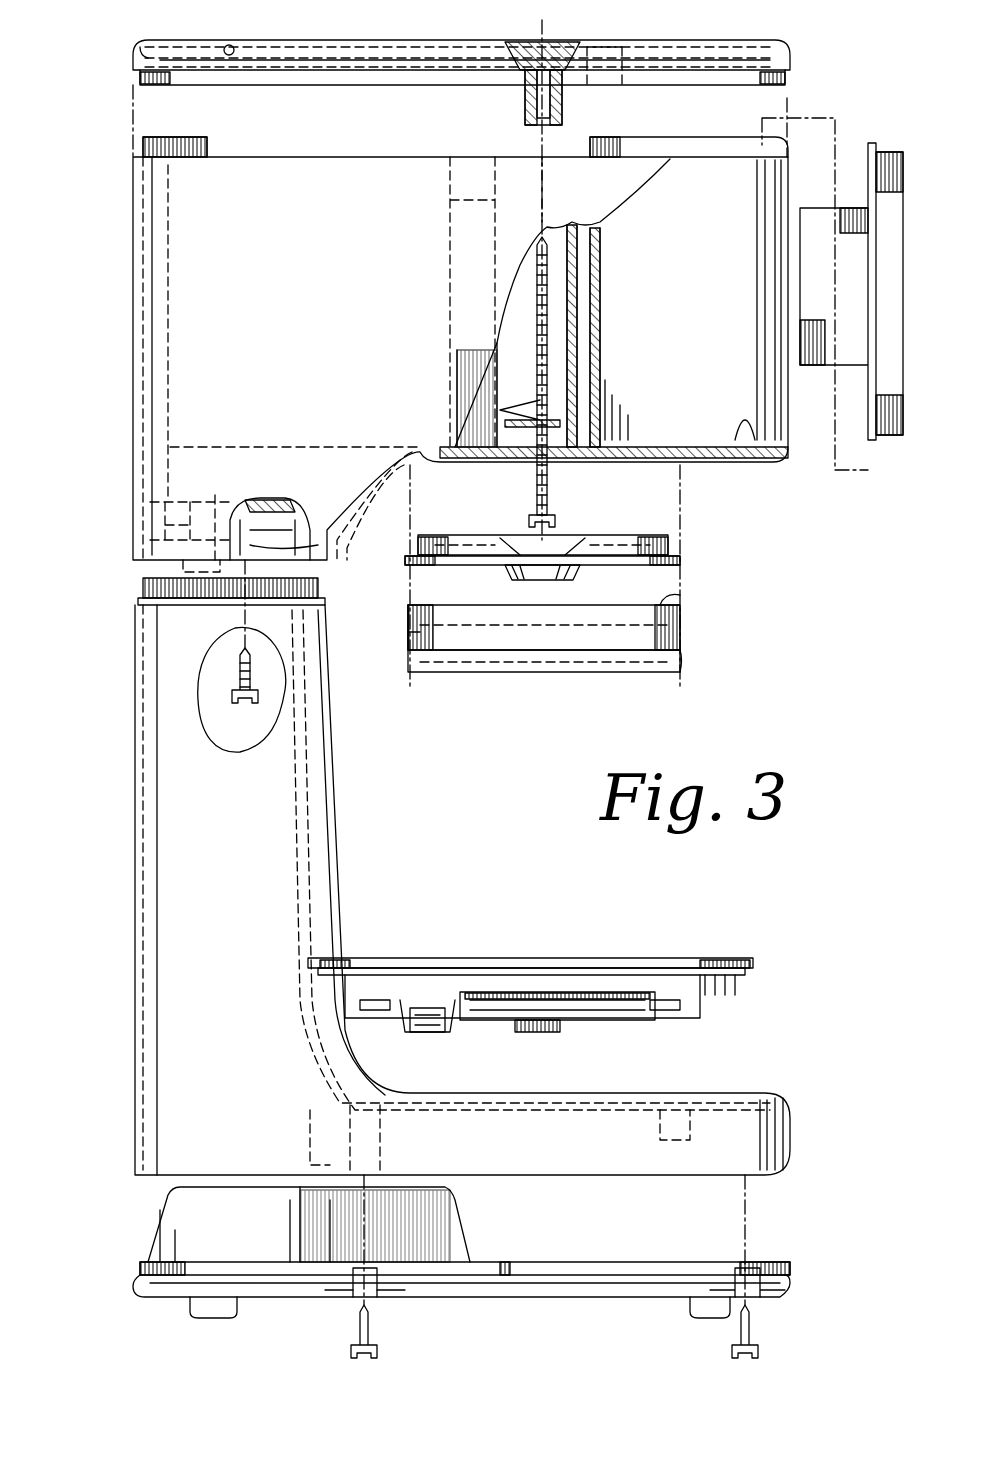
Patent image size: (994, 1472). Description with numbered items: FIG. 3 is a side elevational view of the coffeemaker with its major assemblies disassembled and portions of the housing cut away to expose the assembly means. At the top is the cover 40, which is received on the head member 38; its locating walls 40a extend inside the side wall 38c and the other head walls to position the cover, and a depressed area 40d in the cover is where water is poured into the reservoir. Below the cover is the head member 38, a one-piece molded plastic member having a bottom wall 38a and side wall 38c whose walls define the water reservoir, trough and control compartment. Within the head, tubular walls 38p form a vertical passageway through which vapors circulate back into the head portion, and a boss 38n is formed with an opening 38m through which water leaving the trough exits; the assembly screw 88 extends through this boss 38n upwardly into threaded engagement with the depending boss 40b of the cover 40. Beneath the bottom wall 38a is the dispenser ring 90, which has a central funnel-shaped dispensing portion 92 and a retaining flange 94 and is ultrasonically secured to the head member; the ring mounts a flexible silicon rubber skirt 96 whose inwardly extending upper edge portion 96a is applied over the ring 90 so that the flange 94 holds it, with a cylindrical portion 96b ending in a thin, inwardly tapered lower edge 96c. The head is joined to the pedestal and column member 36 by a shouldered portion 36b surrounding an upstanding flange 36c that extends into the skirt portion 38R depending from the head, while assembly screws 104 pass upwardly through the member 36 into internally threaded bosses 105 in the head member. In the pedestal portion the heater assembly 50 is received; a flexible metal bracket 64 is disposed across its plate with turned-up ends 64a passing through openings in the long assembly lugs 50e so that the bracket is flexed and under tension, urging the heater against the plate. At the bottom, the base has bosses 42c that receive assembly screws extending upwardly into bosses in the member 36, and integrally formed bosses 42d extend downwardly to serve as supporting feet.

The cover 40 is at (790, 58).
The locating walls 40a is at (440, 80).
The depending boss 40b is at (562, 105).
The depressed area 40d is at (520, 50).
The head member 38 is at (133, 345).
The side wall 38c is at (340, 272).
The boss 38n is at (520, 405).
The tubular walls 38p is at (468, 410).
The opening 38m is at (530, 455).
The bottom wall 38a is at (672, 458).
The skirt portion 38R is at (335, 528).
The internally threaded bosses 105 is at (280, 545).
The assembly screw 88 is at (549, 480).
The dispenser ring 90 is at (670, 545).
The central funnel-shaped dispensing portion 92 is at (575, 572).
The retaining flange 94 is at (682, 560).
The flexible skirt 96 is at (682, 626).
The upper edge portion 96a is at (685, 598).
The cylindrical portion 96b is at (408, 632).
The lower edge 96c is at (682, 660).
The pedestal and column member 36 is at (340, 790).
The upstanding flange 36c is at (140, 590).
The shouldered portion 36b is at (140, 604).
The assembly screws 104 is at (235, 688).
The heater assembly 50 is at (655, 955).
The flexible metal bracket 64 is at (500, 1025).
The turned up ends 64a is at (425, 1028).
The long assembly lugs 50e is at (447, 1032).
The bosses 42c is at (372, 1268).
The bosses 42d is at (237, 1305).